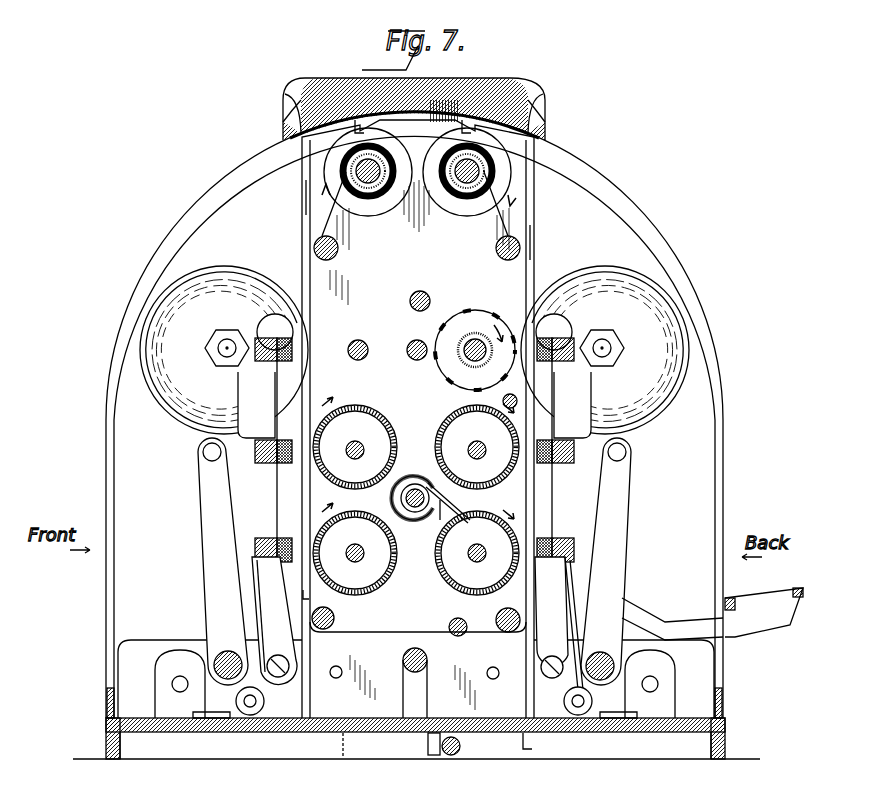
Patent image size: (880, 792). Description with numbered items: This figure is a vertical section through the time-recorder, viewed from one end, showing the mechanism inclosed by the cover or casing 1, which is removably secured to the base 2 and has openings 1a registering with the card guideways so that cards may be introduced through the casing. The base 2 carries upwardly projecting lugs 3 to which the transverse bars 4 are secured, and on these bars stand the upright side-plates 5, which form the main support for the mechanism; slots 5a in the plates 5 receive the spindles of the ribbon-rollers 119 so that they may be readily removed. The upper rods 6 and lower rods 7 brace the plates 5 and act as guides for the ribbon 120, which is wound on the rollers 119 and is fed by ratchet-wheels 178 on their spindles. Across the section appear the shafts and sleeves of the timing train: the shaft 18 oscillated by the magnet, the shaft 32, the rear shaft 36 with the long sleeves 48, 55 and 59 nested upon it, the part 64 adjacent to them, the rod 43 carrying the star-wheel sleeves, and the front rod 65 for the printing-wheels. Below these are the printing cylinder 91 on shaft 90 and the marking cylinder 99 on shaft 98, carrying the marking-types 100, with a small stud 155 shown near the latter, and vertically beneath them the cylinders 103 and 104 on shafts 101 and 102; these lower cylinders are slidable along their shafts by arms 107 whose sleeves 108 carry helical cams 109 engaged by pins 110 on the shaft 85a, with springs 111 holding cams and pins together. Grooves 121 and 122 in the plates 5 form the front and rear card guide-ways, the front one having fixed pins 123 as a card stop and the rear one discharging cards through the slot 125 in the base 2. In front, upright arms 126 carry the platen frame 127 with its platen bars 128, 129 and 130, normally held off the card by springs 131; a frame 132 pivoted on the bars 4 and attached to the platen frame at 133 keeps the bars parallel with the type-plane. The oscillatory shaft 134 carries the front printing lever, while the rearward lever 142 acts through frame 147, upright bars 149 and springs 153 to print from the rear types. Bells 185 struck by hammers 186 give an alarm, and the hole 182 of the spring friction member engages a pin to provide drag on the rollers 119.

The cover or casing 1 is at (725, 419).
The openings 1a is at (300, 88).
The base 2 is at (727, 742).
The lugs 3 is at (415, 684).
The transverse bars 4 is at (416, 679).
The main-frame or side-plates 5 is at (418, 409).
The slots 5a is at (354, 127).
The rods 6 is at (339, 247).
The rods 7 is at (334, 621).
The shaft 18 is at (449, 627).
The shaft 32 is at (428, 297).
The rear shaft 36 is at (481, 336).
The rod 43 is at (408, 351).
The long sleeve 48 is at (469, 363).
The long sleeve 55 is at (472, 336).
The long sleeve 59 is at (463, 344).
The wheel 64 is at (479, 362).
The rod 65 is at (357, 341).
The shaft 85a is at (421, 522).
The shaft 90 is at (362, 445).
The printing cylinder 91 is at (368, 404).
The shaft 98 is at (471, 451).
The cylinder 99 is at (477, 446).
The marking-types 100 is at (458, 416).
The shaft 101 is at (357, 563).
The shaft 102 is at (478, 563).
The cylinder 103 is at (366, 590).
The cylinder 104 is at (484, 593).
The arm 107 is at (423, 512).
The hollow sleeve 108 is at (432, 494).
The helical cams 109 is at (405, 499).
The pins 110 is at (415, 481).
The springs 111 is at (455, 488).
The ribbon-rollers 119 is at (388, 154).
The ribbon 120 is at (320, 227).
The grooves 121 is at (306, 195).
The grooves 122 is at (534, 245).
The fixed pins 123 is at (320, 599).
The slot 125 is at (540, 746).
The upright arms 126 is at (274, 620).
The platen frame 127 is at (256, 405).
The platen bar 128 is at (268, 362).
The platen bar 129 is at (268, 465).
The platen bar 130 is at (272, 538).
The springs 131 is at (262, 620).
The frame 132 is at (222, 655).
The pivot 133 is at (203, 455).
The oscillatory shaft 134 is at (427, 661).
The manually-operated lever 142 is at (657, 618).
The frame 147 is at (603, 654).
The upright bars 149 is at (553, 617).
The springs 153 is at (575, 630).
The stud 155 is at (497, 399).
The ratchet-wheels 178 is at (572, 405).
The hole 182 is at (223, 561).
The bells 185 is at (414, 350).
The hammers 186 is at (272, 320).